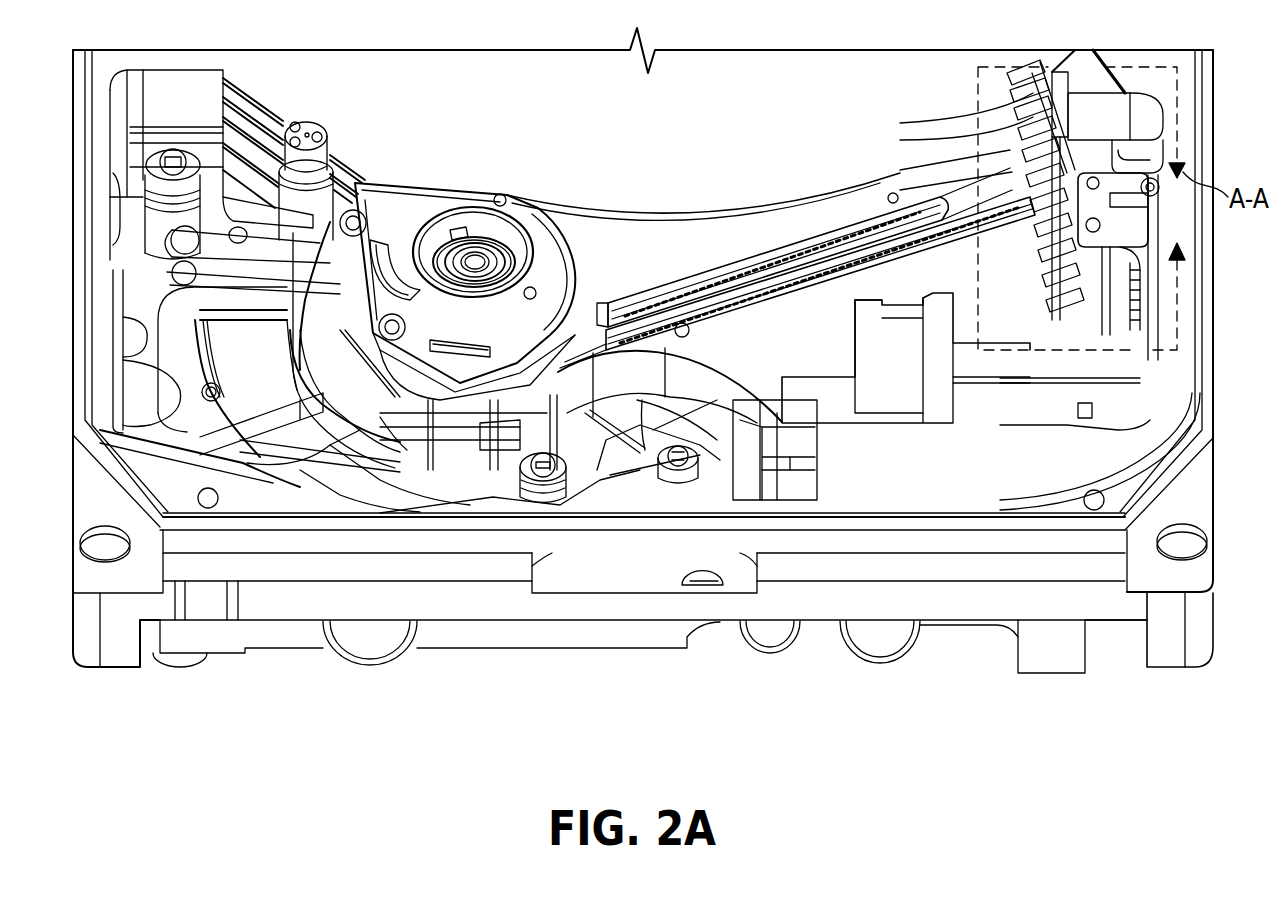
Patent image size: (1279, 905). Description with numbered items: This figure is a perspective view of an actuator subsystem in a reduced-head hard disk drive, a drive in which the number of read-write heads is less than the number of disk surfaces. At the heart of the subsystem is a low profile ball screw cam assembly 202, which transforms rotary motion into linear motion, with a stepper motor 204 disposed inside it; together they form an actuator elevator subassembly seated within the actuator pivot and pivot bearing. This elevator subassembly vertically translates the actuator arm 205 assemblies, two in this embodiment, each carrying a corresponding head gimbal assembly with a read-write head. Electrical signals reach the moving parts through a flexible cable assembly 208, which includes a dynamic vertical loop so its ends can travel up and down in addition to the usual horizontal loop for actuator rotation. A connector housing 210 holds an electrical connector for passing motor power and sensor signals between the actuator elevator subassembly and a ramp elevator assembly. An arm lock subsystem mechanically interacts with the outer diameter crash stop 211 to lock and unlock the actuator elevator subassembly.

The low profile ball screw cam assembly 202 is at (547, 247).
The stepper motor 204 is at (480, 262).
The actuator arm 205 is at (760, 220).
The flexible cable assembly 208 is at (643, 350).
The connector housing 210 is at (898, 392).
The outer diameter crash stop 211 is at (330, 150).